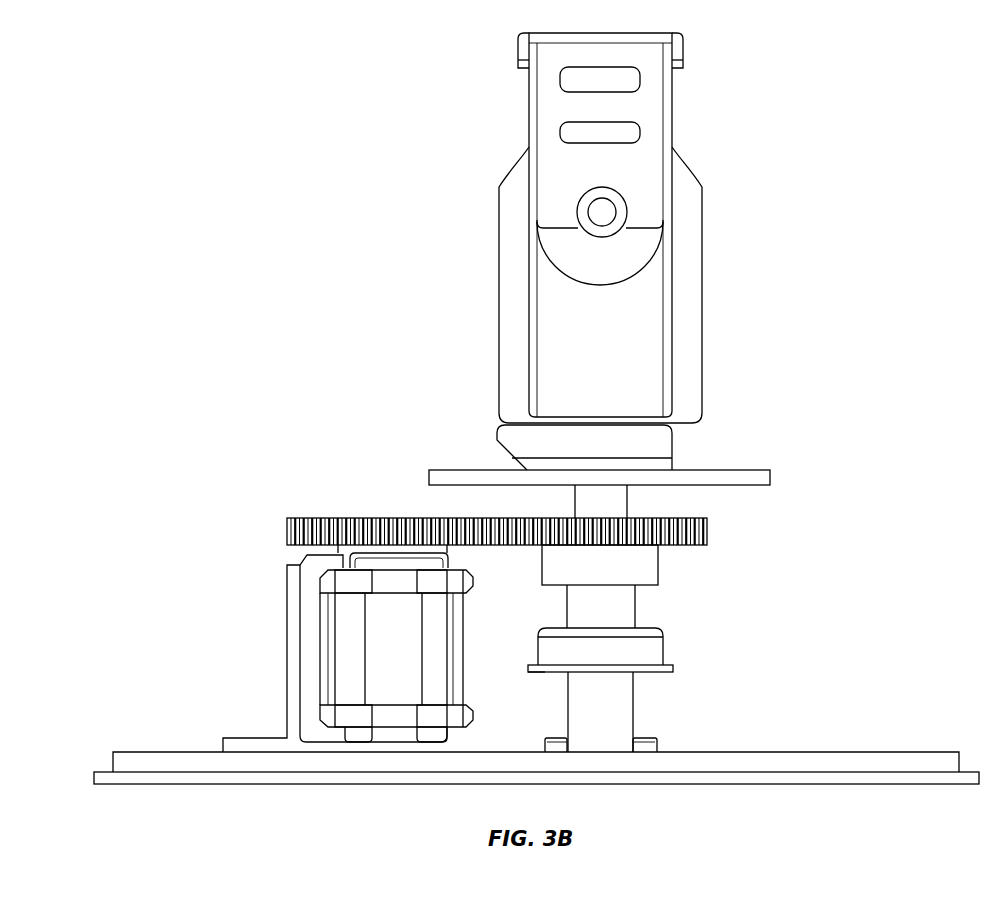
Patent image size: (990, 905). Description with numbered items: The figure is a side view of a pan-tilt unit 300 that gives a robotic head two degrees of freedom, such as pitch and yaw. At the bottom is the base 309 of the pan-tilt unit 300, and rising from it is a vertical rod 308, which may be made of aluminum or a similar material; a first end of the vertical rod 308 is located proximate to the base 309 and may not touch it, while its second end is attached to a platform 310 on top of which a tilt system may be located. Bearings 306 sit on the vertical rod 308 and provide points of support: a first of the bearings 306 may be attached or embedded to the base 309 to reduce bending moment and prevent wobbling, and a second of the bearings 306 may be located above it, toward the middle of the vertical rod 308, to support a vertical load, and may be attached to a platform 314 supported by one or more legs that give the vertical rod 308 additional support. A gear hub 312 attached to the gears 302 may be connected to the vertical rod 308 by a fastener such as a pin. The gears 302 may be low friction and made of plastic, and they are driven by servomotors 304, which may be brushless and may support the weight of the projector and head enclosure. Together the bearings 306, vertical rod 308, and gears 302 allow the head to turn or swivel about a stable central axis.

The pan-tilt unit 300 is at (797, 65).
The gears 302 is at (390, 527).
The servomotors 304 is at (688, 342).
The bearings 306 is at (657, 743).
The vertical rod 308 is at (590, 499).
The base 309 is at (717, 758).
The platform 310 is at (717, 470).
The gear hub 312 is at (648, 562).
The platform 314 is at (543, 670).